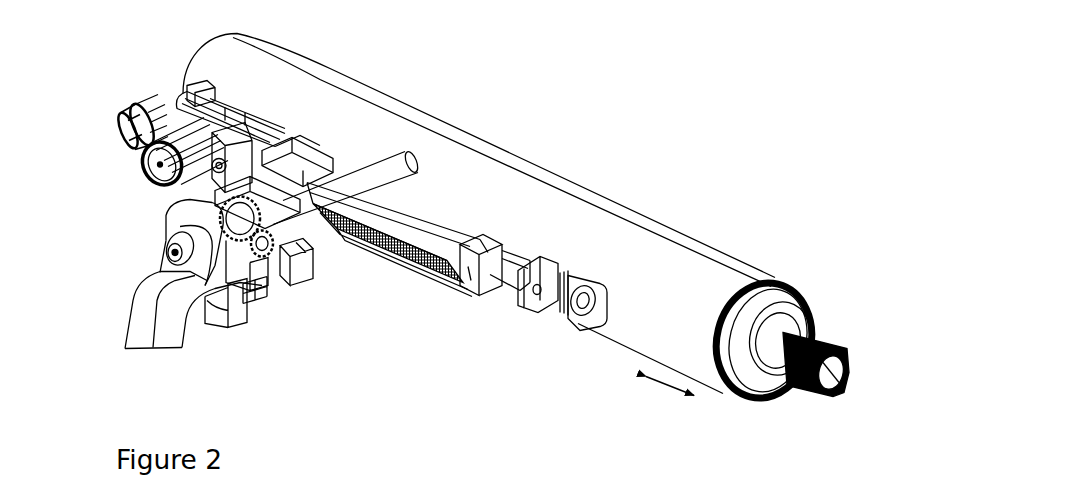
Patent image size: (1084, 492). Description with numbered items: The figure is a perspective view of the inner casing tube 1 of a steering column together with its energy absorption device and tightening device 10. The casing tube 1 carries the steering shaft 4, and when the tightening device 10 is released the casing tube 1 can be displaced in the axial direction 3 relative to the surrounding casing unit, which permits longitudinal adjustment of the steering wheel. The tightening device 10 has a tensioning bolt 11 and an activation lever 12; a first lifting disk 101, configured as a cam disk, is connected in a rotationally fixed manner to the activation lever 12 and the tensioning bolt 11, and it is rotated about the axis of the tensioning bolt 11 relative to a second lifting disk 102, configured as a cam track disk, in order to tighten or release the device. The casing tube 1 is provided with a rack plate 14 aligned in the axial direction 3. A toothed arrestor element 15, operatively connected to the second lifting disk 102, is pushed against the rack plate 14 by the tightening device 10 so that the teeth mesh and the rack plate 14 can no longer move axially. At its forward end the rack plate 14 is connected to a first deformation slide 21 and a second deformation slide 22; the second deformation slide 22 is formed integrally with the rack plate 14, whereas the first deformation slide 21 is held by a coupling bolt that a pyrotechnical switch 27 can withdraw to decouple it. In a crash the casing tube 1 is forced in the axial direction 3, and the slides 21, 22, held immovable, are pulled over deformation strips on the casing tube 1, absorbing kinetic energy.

The casing tube 1 is at (681, 216).
The axial direction 3 is at (675, 391).
The steering shaft 4 is at (839, 327).
The tightening device 10 is at (277, 317).
The tensioning bolt 11 is at (391, 160).
The activation lever 12 is at (145, 312).
The rack plate 14 is at (421, 266).
The arrestor element 15 is at (312, 284).
The first deformation slide 21 is at (205, 108).
The second deformation slide 22 is at (300, 146).
The pyrotechnical switch 27 is at (138, 174).
The first lifting disk 101 is at (216, 203).
The second lifting disk 102 is at (278, 233).